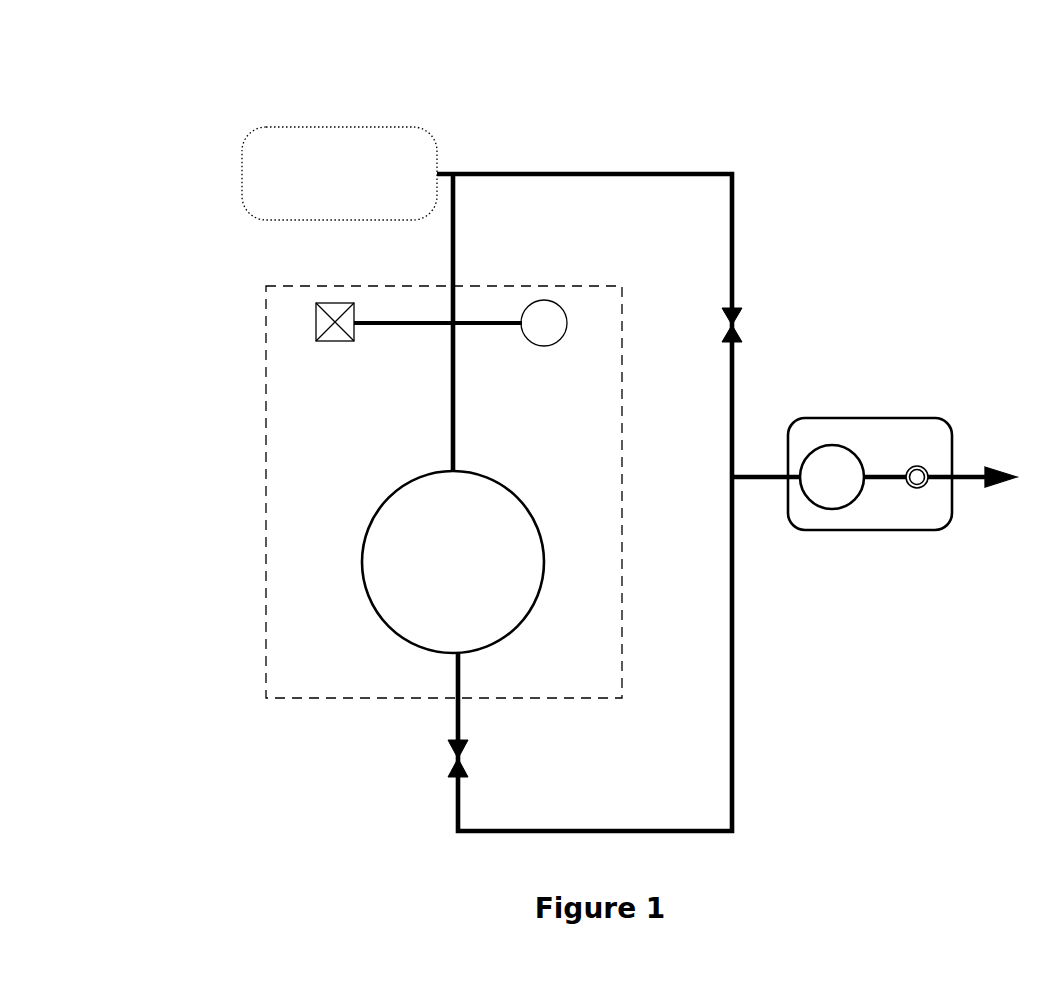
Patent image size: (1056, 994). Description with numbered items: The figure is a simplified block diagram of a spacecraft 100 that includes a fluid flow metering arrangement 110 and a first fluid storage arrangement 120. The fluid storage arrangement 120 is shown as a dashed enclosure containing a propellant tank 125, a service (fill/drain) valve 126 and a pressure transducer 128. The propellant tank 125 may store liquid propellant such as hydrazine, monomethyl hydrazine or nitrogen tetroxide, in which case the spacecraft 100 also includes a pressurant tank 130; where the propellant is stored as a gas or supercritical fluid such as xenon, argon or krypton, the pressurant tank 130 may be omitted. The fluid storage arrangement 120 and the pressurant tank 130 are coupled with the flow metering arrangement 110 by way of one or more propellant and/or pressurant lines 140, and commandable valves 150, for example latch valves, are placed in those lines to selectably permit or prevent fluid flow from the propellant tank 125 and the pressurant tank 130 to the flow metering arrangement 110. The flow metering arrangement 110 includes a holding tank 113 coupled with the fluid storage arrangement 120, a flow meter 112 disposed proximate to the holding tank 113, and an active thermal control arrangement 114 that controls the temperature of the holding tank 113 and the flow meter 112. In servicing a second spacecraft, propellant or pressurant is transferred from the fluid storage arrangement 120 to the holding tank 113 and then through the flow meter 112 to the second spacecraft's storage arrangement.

The spacecraft 100 is at (270, 42).
The fluid flow metering arrangement 110 is at (905, 360).
The flow meter 112 is at (921, 490).
The holding tank 113 is at (828, 509).
The active thermal control arrangement 114 is at (955, 434).
The first fluid storage arrangement 120 is at (265, 368).
The propellant tank 125 is at (453, 562).
The service (fill/drain) valve 126 is at (316, 322).
The pressure transducer 128 is at (568, 316).
The pressurant tank 130 is at (246, 152).
The propellant and/or pressurant lines 140 is at (727, 210).
The commandable valves 150 is at (737, 312).